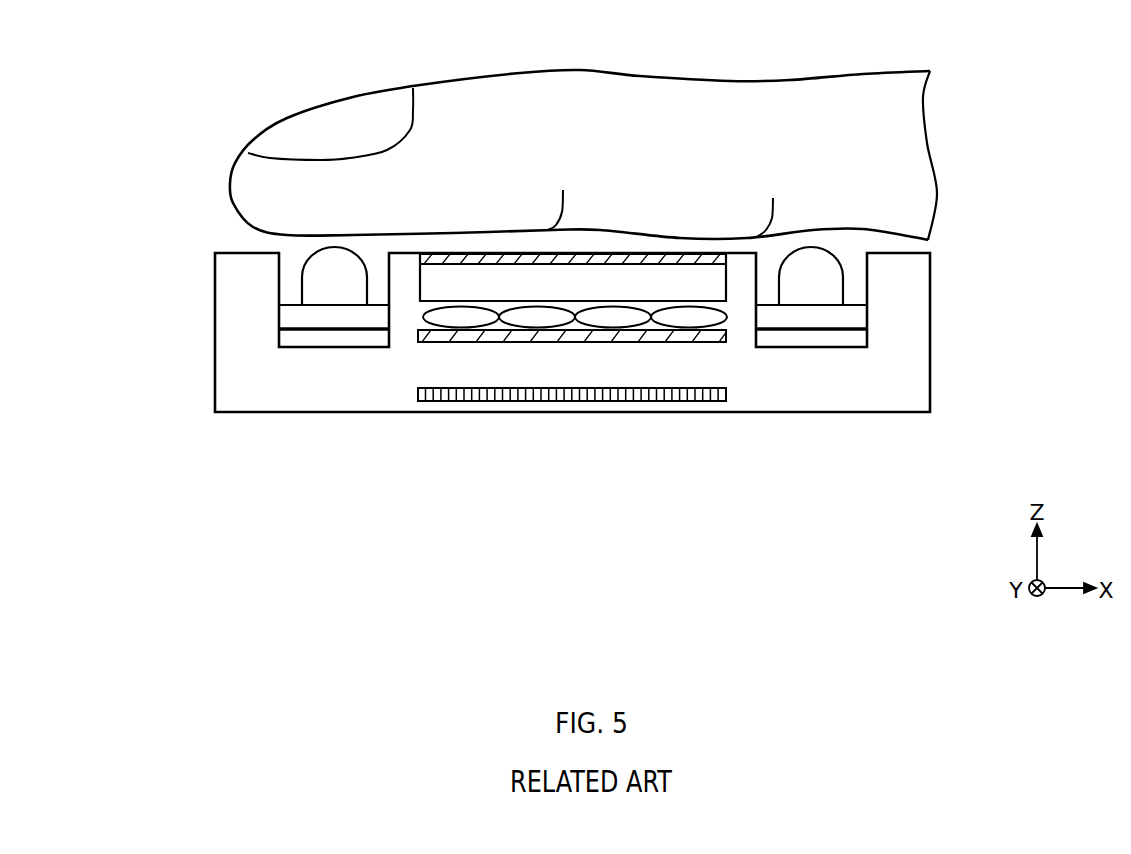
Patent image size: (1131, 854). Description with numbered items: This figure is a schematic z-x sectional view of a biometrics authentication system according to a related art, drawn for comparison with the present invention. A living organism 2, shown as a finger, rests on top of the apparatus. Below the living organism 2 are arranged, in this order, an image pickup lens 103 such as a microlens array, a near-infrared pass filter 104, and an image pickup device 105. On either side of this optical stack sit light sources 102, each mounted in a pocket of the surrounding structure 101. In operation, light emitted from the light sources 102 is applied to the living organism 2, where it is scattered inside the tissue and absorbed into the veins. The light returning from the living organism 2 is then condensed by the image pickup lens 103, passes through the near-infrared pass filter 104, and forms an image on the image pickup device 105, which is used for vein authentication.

The living organism 2 is at (750, 74).
The housing 101 is at (923, 278).
The light sources 102 is at (300, 316).
The image pickup lens 103 is at (710, 318).
The near-infrared pass filter 104 is at (726, 337).
The image pickup device 105 is at (726, 395).